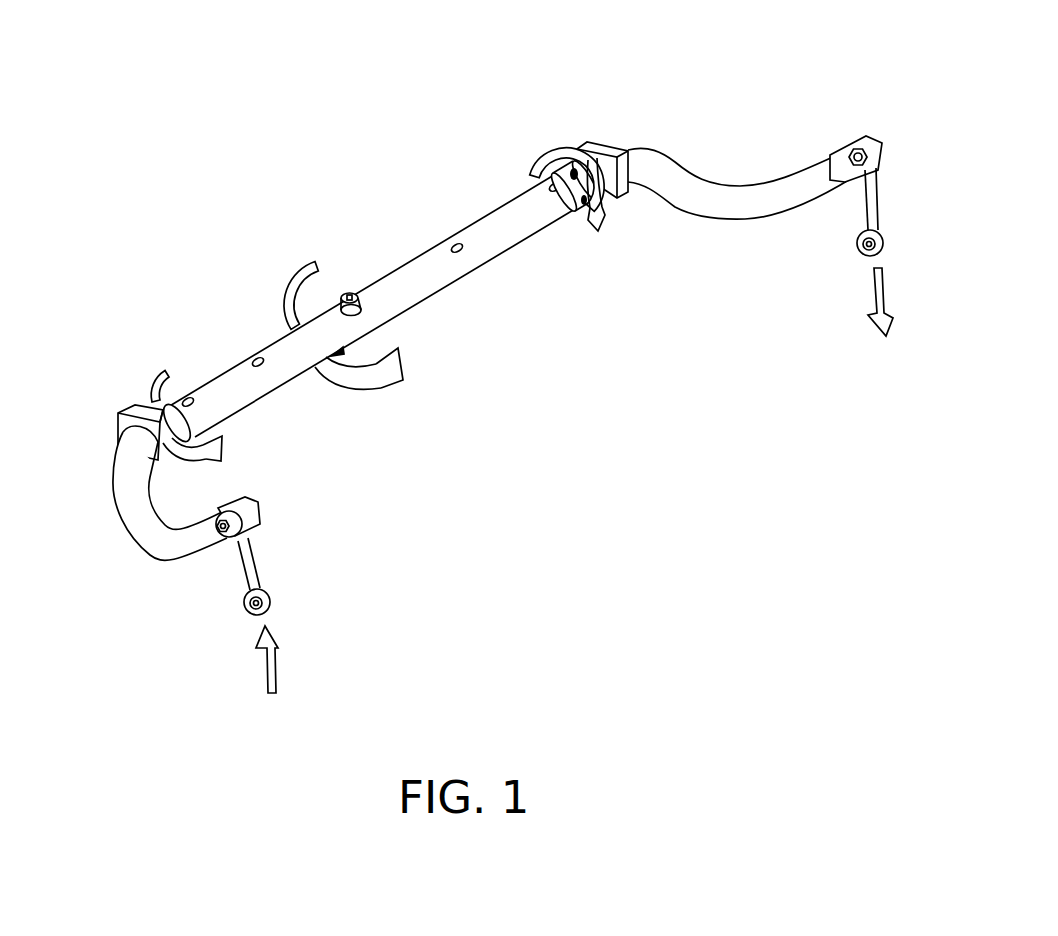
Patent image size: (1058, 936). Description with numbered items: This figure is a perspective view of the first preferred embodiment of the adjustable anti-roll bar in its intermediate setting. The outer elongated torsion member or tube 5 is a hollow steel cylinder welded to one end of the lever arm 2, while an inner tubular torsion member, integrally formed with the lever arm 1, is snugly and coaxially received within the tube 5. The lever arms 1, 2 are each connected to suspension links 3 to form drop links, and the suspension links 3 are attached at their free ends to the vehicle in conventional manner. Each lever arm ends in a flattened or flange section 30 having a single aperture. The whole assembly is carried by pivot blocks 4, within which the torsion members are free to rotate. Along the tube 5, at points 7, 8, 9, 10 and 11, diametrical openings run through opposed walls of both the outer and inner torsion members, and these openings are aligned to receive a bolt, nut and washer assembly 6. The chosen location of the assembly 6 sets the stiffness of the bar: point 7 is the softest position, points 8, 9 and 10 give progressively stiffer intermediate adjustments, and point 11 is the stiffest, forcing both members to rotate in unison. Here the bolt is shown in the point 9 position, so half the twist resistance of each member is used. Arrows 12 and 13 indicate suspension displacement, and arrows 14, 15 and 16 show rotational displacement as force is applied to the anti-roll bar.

The lever arm 1 is at (134, 483).
The lever arm 2 is at (748, 141).
The suspension link 3 is at (465, 412).
The pivot block 4 is at (331, 235).
The outer elongated torsion member 5 is at (335, 310).
The bolt, nut and washer assembly 6 is at (310, 206).
The point 7 is at (603, 247).
The point 8 is at (525, 305).
The point 9 is at (444, 360).
The point 10 is at (365, 406).
The point 11 is at (288, 455).
The arrow 12 is at (805, 345).
The arrow 13 is at (365, 639).
The arrow 14 is at (480, 127).
The arrow 15 is at (106, 337).
The arrow 16 is at (232, 246).
The flattened or flange section 30 is at (549, 287).